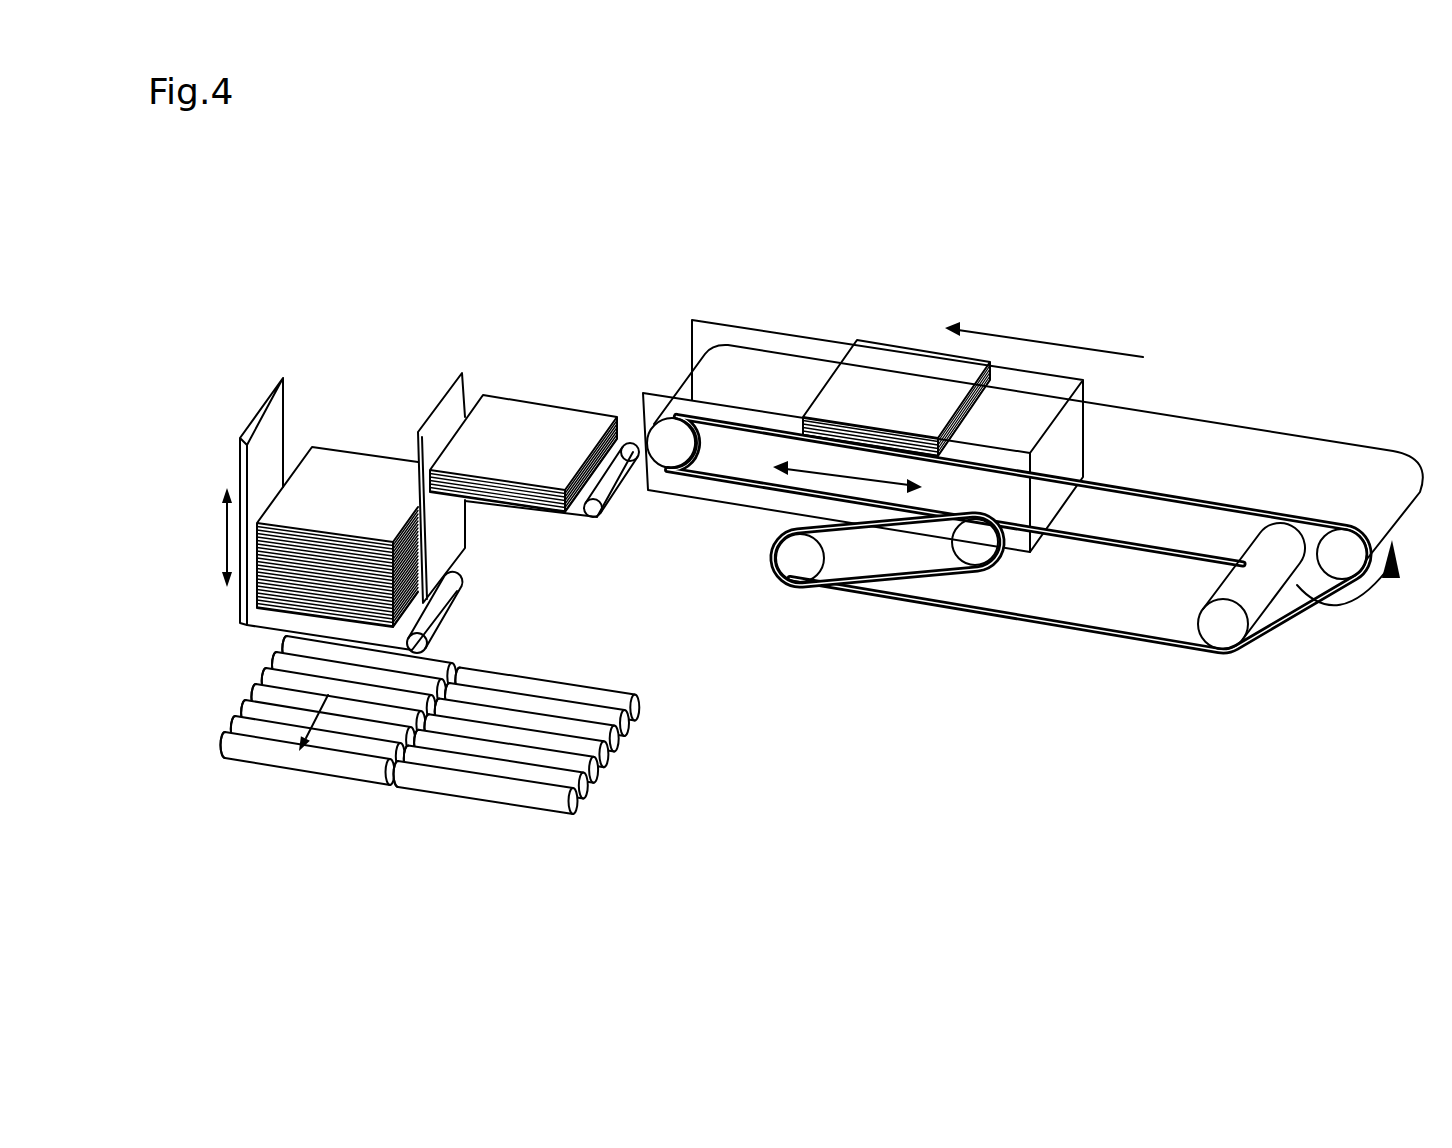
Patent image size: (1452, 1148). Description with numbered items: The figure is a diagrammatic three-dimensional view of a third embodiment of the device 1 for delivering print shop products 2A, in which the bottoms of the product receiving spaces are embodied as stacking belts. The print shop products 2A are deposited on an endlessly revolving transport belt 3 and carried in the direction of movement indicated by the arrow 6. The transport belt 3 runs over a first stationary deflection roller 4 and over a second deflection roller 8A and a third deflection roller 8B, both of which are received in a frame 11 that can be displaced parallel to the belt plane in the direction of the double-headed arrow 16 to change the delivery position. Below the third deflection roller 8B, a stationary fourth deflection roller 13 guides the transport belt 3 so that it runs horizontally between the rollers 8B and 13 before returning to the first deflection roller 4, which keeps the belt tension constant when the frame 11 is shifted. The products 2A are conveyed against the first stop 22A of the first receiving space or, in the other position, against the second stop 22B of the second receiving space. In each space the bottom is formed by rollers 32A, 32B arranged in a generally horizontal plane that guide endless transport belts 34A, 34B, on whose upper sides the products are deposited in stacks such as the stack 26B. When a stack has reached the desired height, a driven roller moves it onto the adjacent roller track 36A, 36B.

The device 1 is at (297, 262).
The print shop products 2A is at (497, 413).
The transport belt 3 is at (1195, 433).
The first stationary deflection roller 4 is at (1333, 543).
The arrow 6 is at (1038, 343).
The second deflection roller 8A is at (687, 450).
The third deflection roller 8B is at (975, 550).
The frame 11 is at (748, 450).
The fourth deflection roller 13 is at (797, 565).
The double-headed arrow 16 is at (847, 477).
The first stop 22A is at (455, 403).
The second stop 22B is at (272, 432).
The stack 26B is at (341, 458).
The roller 32A is at (577, 512).
The roller 32B is at (258, 618).
The transport belt 34A is at (608, 487).
The transport belt 34B is at (430, 618).
The roller track 36A is at (522, 795).
The roller track 36B is at (320, 762).